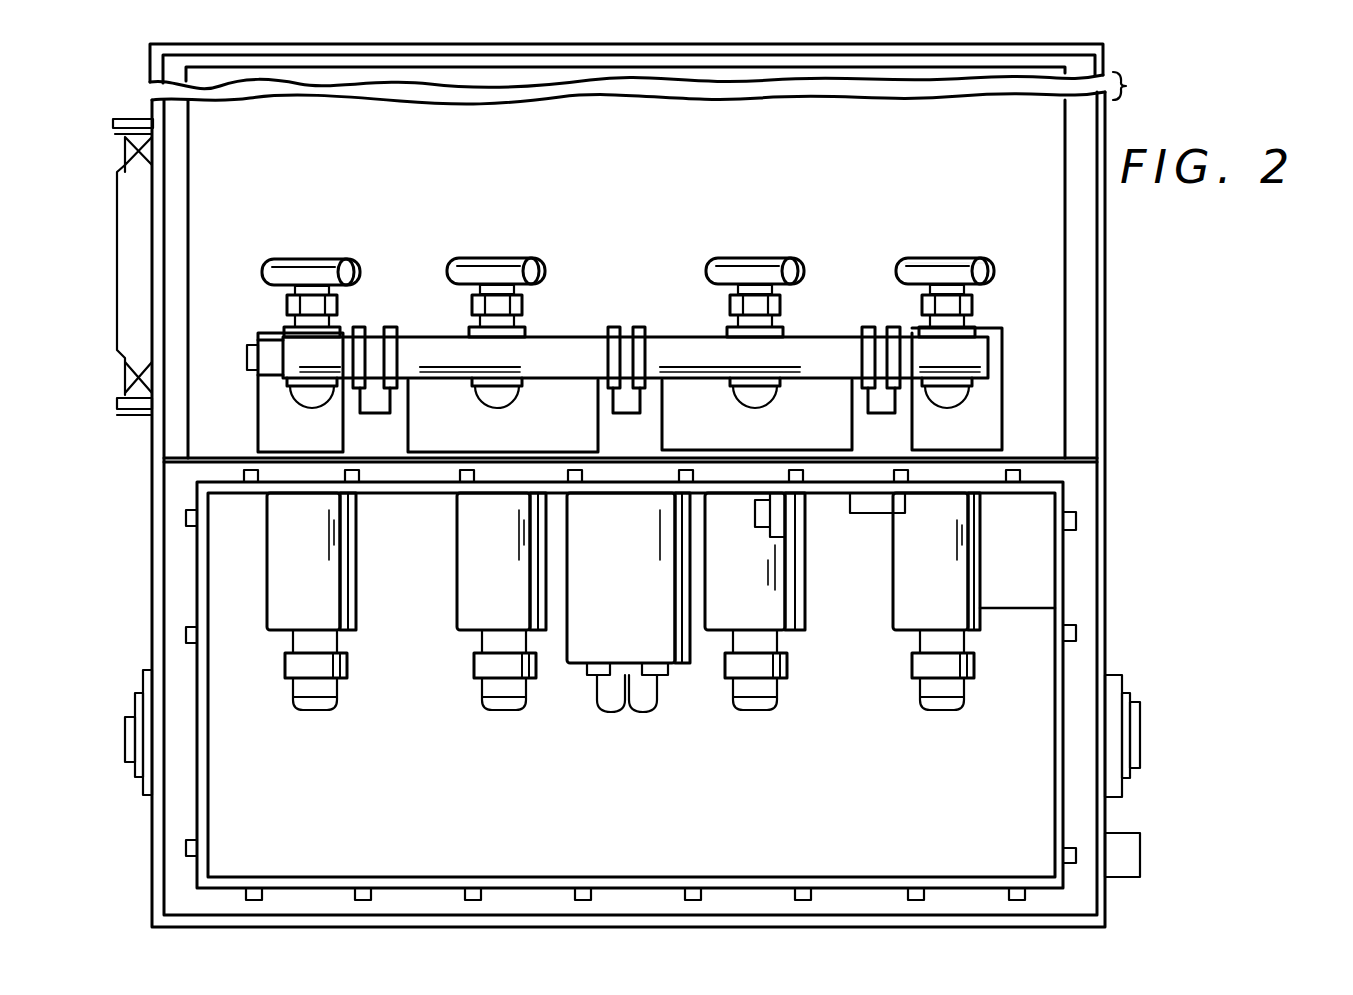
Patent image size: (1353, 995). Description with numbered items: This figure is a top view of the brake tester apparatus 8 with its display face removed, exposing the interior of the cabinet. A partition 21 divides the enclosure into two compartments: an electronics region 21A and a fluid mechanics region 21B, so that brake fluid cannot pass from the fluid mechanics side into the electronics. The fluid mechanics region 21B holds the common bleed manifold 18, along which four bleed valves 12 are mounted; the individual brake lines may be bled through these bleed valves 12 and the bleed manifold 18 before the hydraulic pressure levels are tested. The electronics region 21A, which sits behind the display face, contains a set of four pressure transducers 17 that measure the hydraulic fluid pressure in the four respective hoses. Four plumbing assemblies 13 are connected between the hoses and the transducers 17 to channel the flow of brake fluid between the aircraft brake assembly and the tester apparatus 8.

The test apparatus 8 is at (166, 933).
The bleed valve 12 is at (933, 267).
The plumbing assembly 13 is at (284, 328).
The pressure transducer 17 is at (462, 613).
The bleed manifold 18 is at (676, 342).
The partition 21 is at (1053, 456).
The electronics region 21A is at (702, 781).
The fluid mechanics region 21B is at (690, 162).